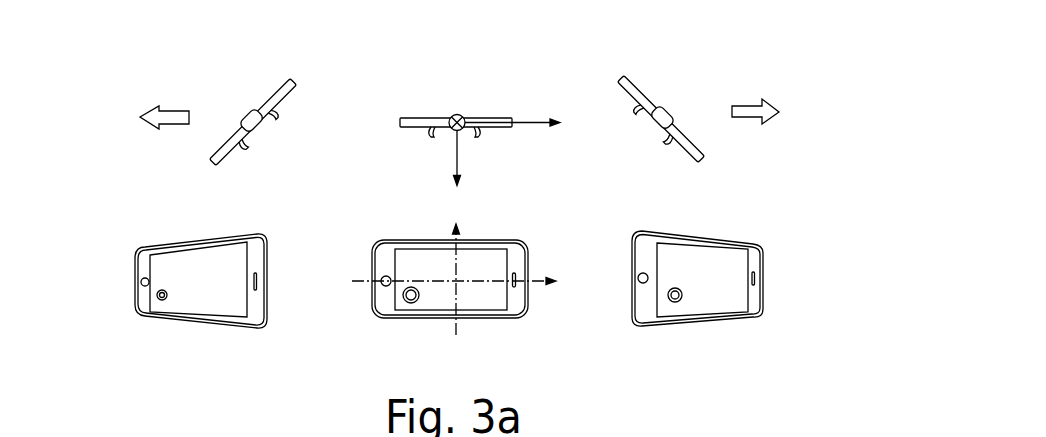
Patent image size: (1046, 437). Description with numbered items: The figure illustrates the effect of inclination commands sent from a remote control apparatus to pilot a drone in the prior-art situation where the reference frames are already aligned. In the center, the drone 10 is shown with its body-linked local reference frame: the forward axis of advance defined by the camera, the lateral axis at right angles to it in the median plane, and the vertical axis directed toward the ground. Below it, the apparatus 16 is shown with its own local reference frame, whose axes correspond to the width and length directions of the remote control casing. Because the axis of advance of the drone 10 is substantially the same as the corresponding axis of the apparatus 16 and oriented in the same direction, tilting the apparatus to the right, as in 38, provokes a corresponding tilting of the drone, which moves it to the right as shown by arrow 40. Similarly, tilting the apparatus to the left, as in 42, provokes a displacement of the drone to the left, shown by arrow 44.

The drone 10 is at (493, 116).
The apparatus 16 is at (490, 318).
The tilting to the right of the apparatus 38 is at (771, 230).
The arrow 40 is at (762, 103).
The tilting to the left of the apparatus 42 is at (128, 233).
The arrow 44 is at (171, 115).